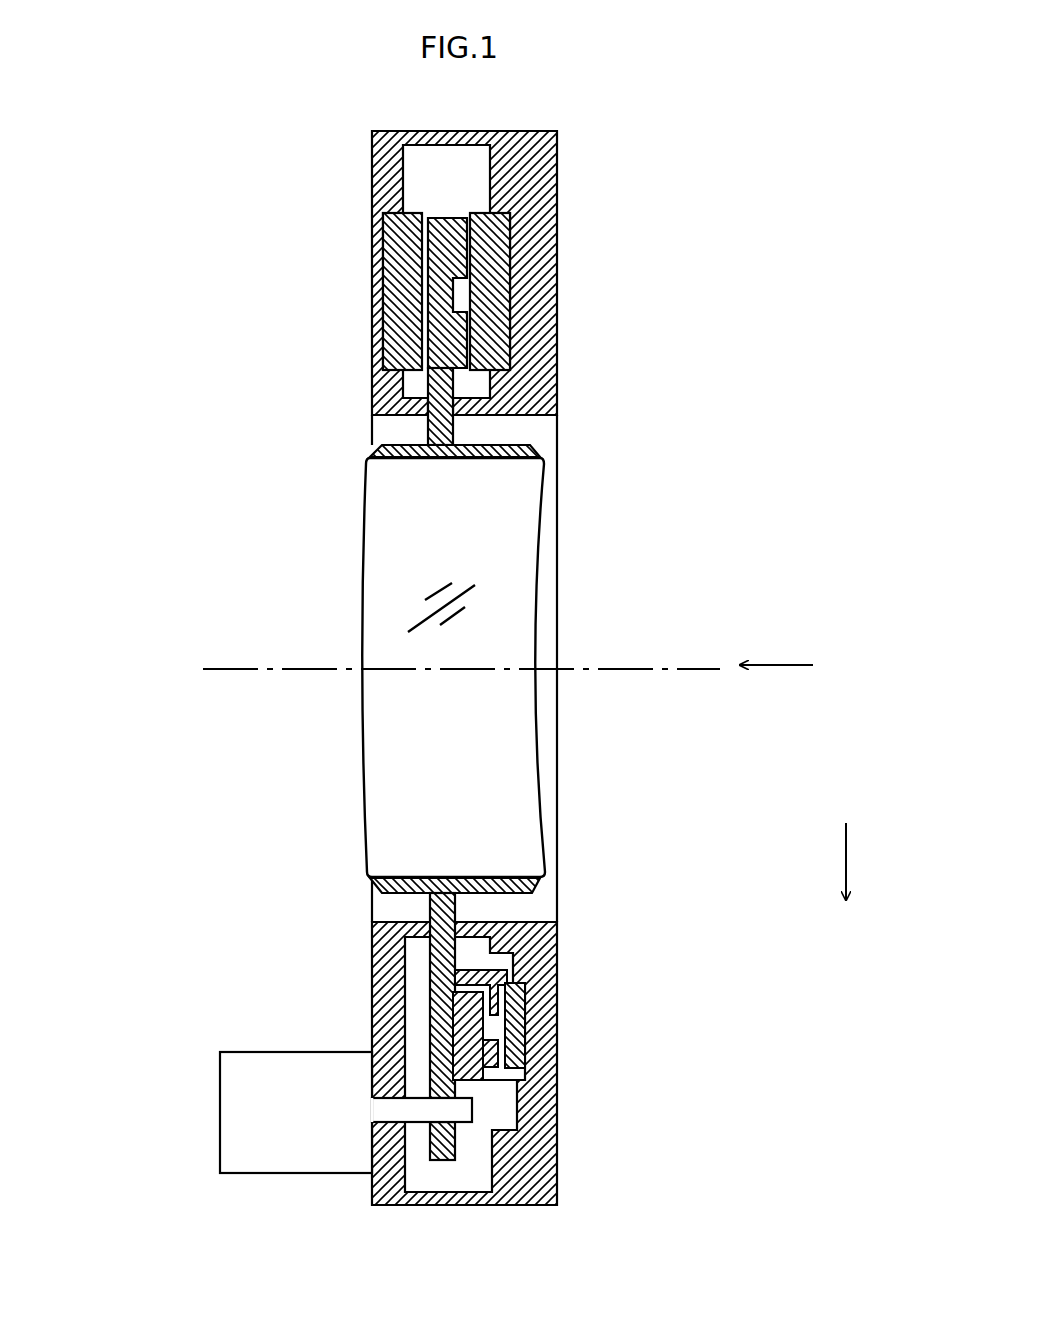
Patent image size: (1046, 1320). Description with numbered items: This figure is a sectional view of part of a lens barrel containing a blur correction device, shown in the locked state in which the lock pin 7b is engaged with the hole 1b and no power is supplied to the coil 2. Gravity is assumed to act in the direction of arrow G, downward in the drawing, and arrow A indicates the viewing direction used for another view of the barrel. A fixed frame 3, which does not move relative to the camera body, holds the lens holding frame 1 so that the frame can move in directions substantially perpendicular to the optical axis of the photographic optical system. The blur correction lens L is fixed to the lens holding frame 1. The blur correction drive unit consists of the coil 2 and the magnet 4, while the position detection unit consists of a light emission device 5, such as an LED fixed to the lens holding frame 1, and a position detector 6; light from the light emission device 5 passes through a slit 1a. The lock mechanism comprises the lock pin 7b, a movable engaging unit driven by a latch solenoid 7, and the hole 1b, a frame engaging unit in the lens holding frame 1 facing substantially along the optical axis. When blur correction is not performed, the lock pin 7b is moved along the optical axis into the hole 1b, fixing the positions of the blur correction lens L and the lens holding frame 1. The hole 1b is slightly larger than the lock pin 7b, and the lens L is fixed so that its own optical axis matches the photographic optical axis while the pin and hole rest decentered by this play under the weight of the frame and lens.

The lens holding frame 1 is at (527, 447).
The slit 1a is at (508, 972).
The hole 1b is at (448, 1125).
The coil 2 is at (450, 218).
The fixed frame 3 is at (538, 291).
The magnet 4 is at (383, 247).
The light emission device 5 is at (478, 1068).
The position detector 6 is at (520, 1022).
The latch solenoid 7 is at (230, 1107).
The lock pin 7b is at (420, 1116).
The blur correction lens L is at (510, 542).
The arrow A is at (787, 664).
The arrow G is at (846, 850).